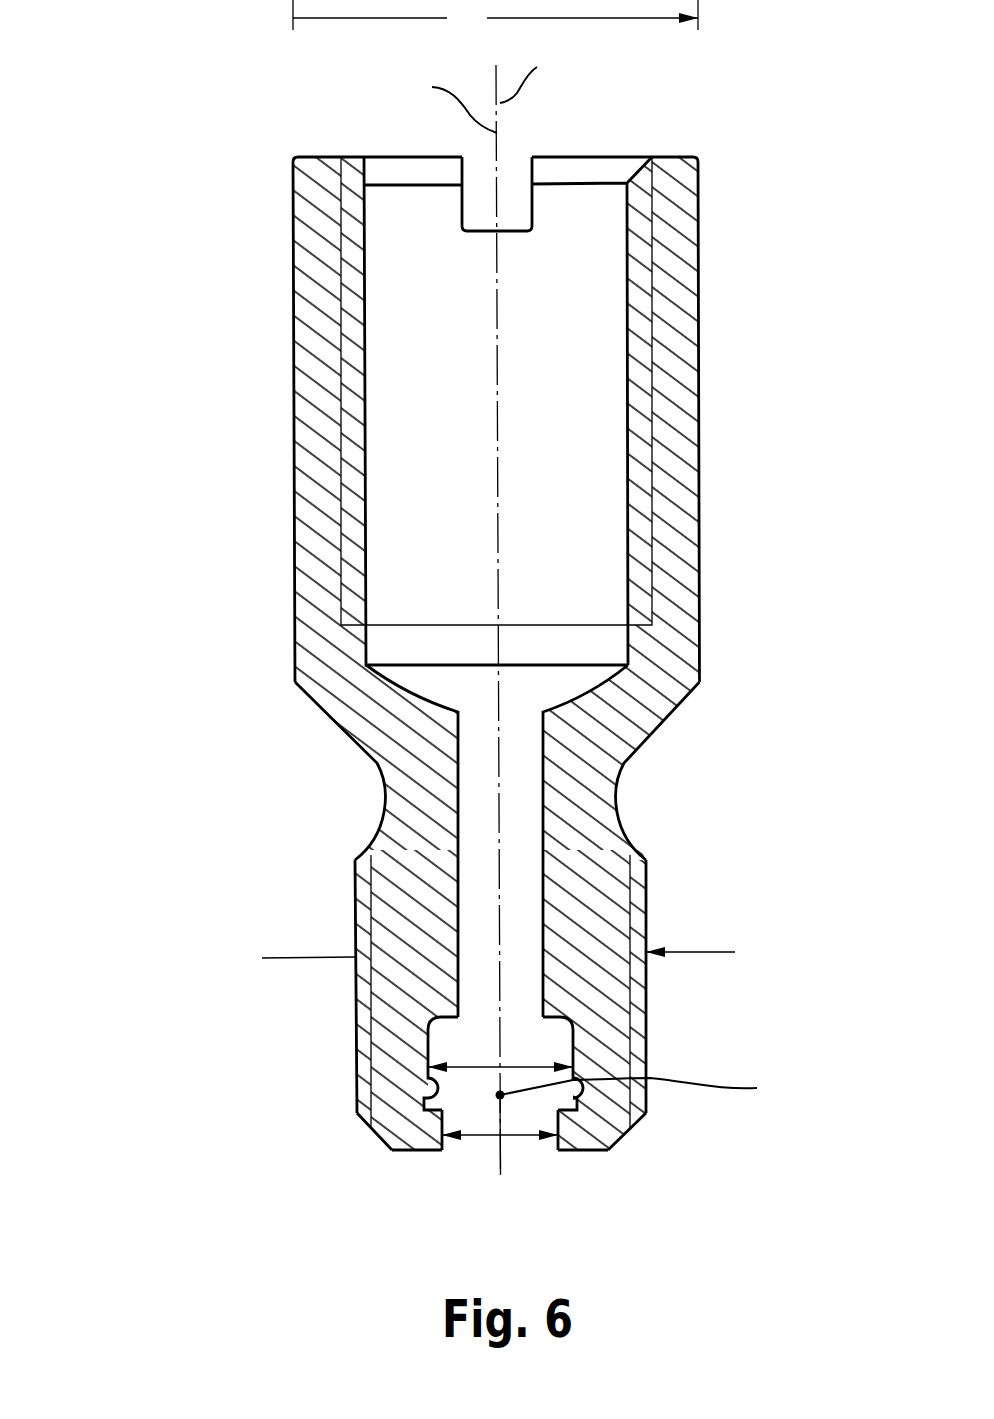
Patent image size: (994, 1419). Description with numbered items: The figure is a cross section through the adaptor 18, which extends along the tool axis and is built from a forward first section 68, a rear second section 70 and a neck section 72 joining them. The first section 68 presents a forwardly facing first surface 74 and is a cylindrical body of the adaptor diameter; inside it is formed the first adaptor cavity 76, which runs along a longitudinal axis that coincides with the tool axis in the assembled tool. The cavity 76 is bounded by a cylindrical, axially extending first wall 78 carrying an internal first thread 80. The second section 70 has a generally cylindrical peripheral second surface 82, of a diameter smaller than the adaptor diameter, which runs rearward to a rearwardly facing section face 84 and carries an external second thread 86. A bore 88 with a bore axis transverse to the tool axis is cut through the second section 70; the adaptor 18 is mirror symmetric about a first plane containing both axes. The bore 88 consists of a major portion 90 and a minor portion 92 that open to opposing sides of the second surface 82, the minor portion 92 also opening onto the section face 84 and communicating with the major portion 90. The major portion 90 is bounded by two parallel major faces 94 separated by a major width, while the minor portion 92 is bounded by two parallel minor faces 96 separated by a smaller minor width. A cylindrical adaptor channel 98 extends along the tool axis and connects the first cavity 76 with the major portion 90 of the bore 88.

The adaptor 18 is at (153, 92).
The first section 68 is at (250, 270).
The second section 70 is at (302, 1028).
The neck section 72 is at (252, 765).
The first surface 74 is at (313, 157).
The first adaptor cavity 76 is at (600, 328).
The first wall 78 is at (627, 236).
The first thread 80 is at (628, 412).
The second surface 82 is at (647, 898).
The section face 84 is at (605, 1152).
The second thread 86 is at (573, 1077).
The bore 88 is at (543, 1030).
The major portion 90 is at (447, 1037).
The minor portion 92 is at (496, 1147).
The major faces 94 is at (428, 1104).
The minor faces 96 is at (445, 1148).
The adaptor channel 98 is at (510, 767).